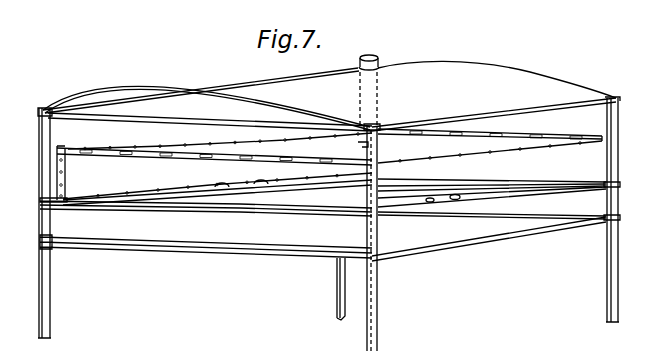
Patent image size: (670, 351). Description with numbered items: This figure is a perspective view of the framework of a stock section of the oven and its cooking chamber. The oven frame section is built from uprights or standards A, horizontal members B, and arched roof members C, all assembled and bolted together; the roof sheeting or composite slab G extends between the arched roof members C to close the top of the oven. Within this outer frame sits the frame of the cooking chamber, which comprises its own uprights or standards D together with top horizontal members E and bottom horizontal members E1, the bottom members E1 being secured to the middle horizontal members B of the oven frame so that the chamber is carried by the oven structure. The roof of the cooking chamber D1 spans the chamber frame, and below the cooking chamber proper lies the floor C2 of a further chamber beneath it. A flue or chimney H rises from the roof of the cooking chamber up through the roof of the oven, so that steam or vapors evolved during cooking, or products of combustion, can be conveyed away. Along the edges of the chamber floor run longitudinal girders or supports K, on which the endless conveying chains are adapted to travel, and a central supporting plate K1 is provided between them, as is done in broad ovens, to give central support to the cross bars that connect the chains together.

The uprights or standards A is at (50, 290).
The horizontal members B is at (233, 123).
The arched roof members C is at (147, 87).
The floor of a chamber beneath the cooking chamber C2 is at (455, 226).
The uprights or standards D is at (66, 183).
The roof of the cooking chamber D1 is at (490, 146).
The top horizontal members E is at (78, 150).
The bottom horizontal members E1 is at (140, 192).
The roof sheeting or composite slab G is at (329, 87).
The flue or chimney H is at (373, 56).
The longitudinal girders or supports K is at (152, 200).
The central supporting plate K1 is at (440, 177).